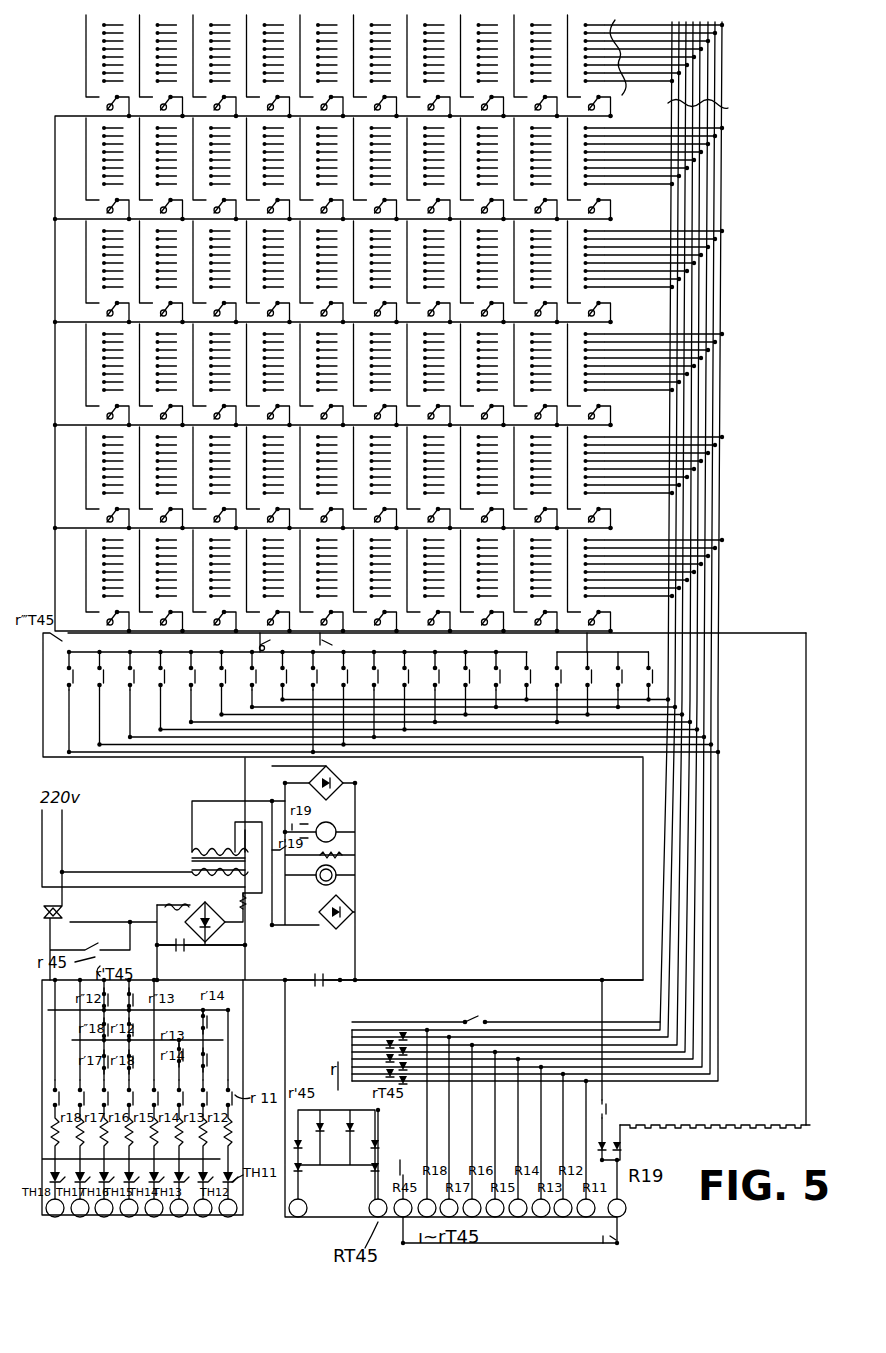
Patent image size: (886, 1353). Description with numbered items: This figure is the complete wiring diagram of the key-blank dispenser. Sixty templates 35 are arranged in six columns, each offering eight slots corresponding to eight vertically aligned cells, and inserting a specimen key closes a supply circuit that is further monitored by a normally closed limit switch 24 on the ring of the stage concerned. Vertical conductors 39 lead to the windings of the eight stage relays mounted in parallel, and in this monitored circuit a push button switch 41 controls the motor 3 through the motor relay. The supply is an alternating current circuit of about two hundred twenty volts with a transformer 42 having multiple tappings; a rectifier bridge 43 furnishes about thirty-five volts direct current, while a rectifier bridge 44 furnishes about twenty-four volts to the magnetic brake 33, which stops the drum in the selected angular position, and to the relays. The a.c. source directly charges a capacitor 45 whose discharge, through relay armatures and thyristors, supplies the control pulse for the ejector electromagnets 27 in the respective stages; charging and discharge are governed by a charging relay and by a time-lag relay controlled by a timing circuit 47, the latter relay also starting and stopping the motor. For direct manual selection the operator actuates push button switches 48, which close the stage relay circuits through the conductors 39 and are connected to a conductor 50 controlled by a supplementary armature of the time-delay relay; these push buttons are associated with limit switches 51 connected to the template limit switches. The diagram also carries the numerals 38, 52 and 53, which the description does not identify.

The templates 35 is at (86, 60).
The limit switch 24 is at (104, 106).
The conductor bundle 38 is at (627, 68).
The conductors 39 is at (712, 105).
The push button switches 48 is at (212, 704).
The limit switches 51 is at (268, 648).
The rectifier bridge 52 is at (334, 643).
The conductor 50 is at (455, 636).
The switch 53 is at (602, 642).
The transformer 42 is at (215, 845).
The rectifier bridge 43 is at (340, 780).
The motor 3 is at (336, 832).
The magnetic brake 33 is at (336, 872).
The rectifier bridge 44 is at (350, 900).
The capacitor 45 is at (185, 955).
The push button switch 41 is at (480, 1018).
The timing circuit 47 is at (354, 1220).
The ejector electromagnets 27 is at (45, 1210).